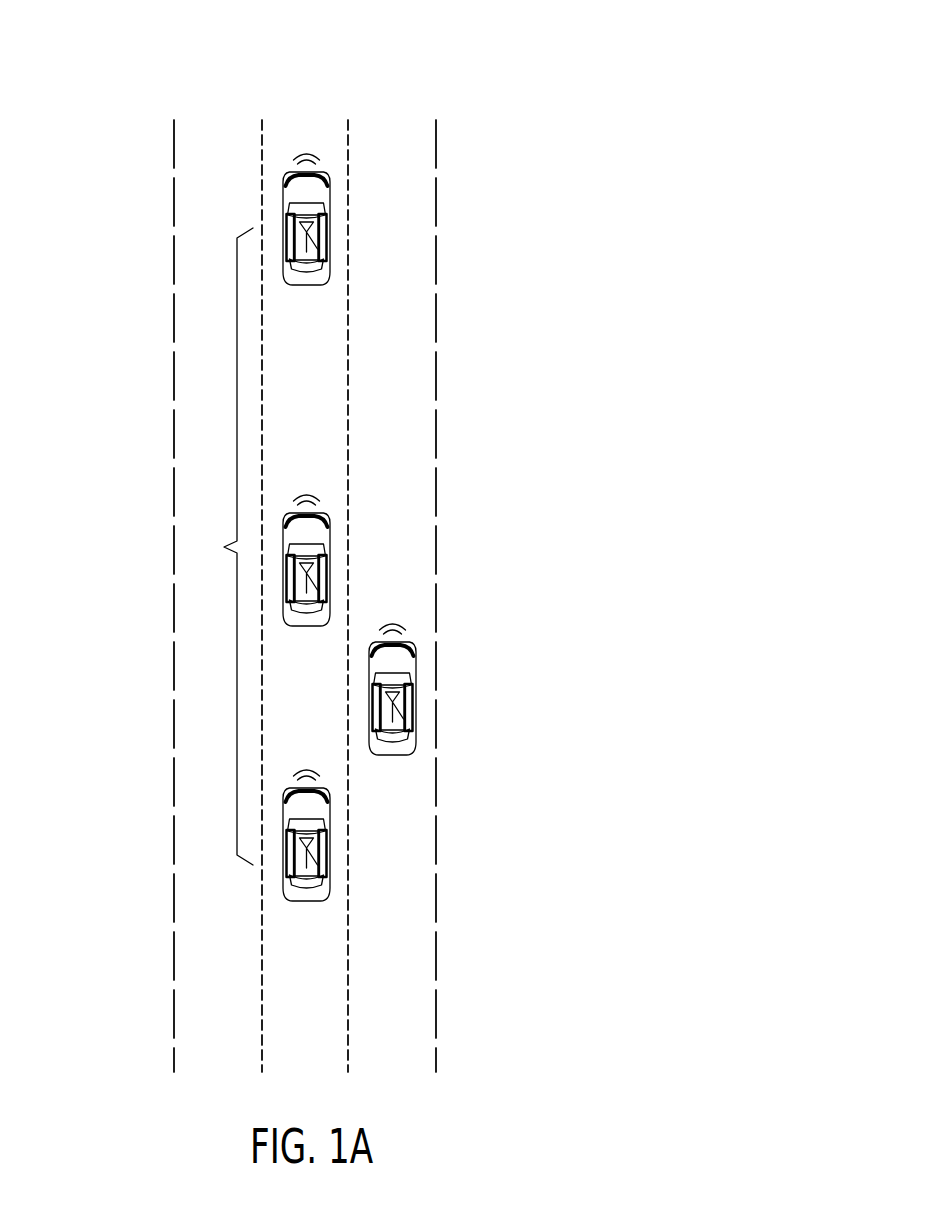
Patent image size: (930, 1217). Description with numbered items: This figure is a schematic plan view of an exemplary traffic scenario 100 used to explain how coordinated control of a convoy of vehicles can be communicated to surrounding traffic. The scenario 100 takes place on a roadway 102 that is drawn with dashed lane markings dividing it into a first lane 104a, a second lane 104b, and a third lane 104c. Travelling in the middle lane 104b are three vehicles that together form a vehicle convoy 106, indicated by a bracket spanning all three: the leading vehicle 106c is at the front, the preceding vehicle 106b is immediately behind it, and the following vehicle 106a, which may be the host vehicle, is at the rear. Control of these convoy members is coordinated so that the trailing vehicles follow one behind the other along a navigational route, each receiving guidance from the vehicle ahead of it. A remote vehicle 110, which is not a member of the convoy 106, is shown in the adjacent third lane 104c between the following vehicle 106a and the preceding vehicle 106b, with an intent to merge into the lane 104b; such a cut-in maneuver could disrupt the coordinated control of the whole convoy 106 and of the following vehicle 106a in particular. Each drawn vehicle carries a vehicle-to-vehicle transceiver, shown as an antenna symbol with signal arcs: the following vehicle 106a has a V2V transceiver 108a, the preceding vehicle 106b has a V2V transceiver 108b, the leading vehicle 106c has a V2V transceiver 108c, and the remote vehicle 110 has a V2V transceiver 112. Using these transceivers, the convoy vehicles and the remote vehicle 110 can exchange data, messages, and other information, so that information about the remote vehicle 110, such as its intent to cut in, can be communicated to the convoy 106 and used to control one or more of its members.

The traffic scenario 100 is at (550, 33).
The roadway 102 is at (156, 511).
The first lane 104a is at (218, 121).
The second lane 104b is at (305, 119).
The third lane 104c is at (392, 121).
The vehicle convoy 106 is at (218, 546).
The following vehicle 106a is at (329, 812).
The preceding vehicle 106b is at (329, 537).
The leading vehicle 106c is at (329, 195).
The V2V transceiver 108a is at (359, 859).
The V2V transceiver 108b is at (359, 568).
The V2V transceiver 108c is at (359, 242).
The remote vehicle 110 is at (416, 668).
The V2V transceiver 112 is at (442, 713).